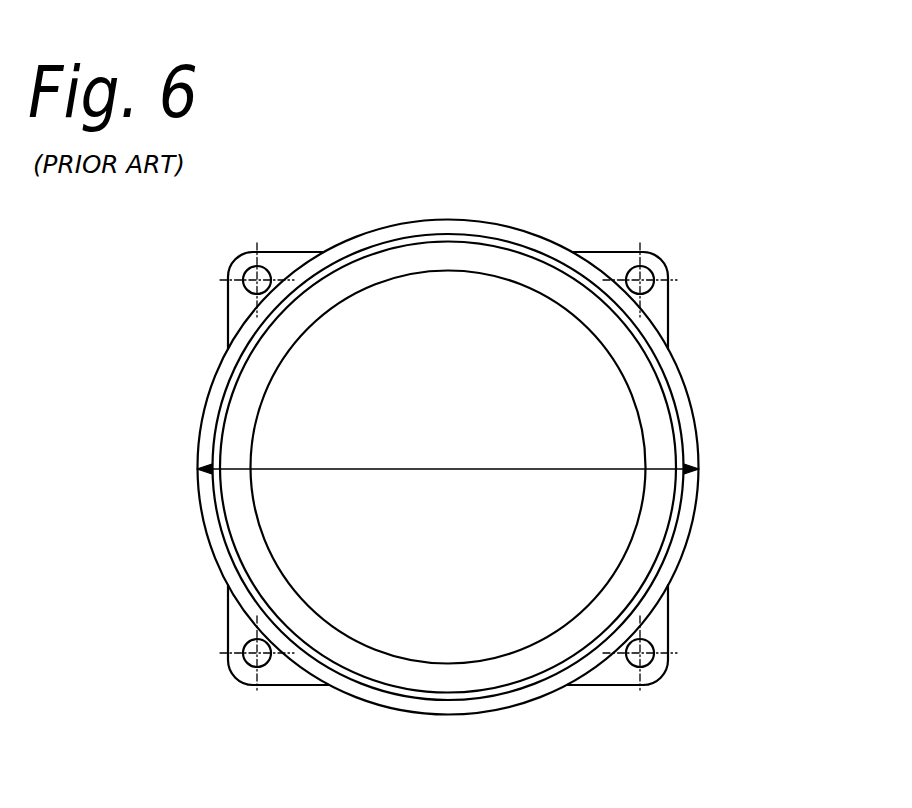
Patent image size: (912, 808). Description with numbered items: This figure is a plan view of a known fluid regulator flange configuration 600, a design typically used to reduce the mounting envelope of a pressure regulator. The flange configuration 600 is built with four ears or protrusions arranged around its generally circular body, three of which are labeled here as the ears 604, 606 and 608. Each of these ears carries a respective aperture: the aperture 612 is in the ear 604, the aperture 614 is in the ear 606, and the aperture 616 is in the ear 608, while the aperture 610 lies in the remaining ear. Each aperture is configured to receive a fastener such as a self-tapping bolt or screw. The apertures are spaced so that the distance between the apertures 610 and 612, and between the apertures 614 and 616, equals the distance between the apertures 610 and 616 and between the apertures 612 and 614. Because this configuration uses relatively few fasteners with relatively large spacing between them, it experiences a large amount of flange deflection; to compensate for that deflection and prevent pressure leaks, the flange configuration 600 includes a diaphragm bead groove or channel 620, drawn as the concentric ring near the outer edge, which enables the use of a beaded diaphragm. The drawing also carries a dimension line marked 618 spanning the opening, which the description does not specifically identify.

The regulator flange configuration 600 is at (622, 195).
The ear 604 is at (228, 320).
The ear 606 is at (280, 686).
The ear 608 is at (668, 617).
The aperture 610 is at (642, 279).
The aperture 612 is at (255, 279).
The aperture 614 is at (256, 653).
The aperture 616 is at (642, 655).
The inner diameter 618 is at (390, 469).
The diaphragm bead groove 620 is at (680, 437).